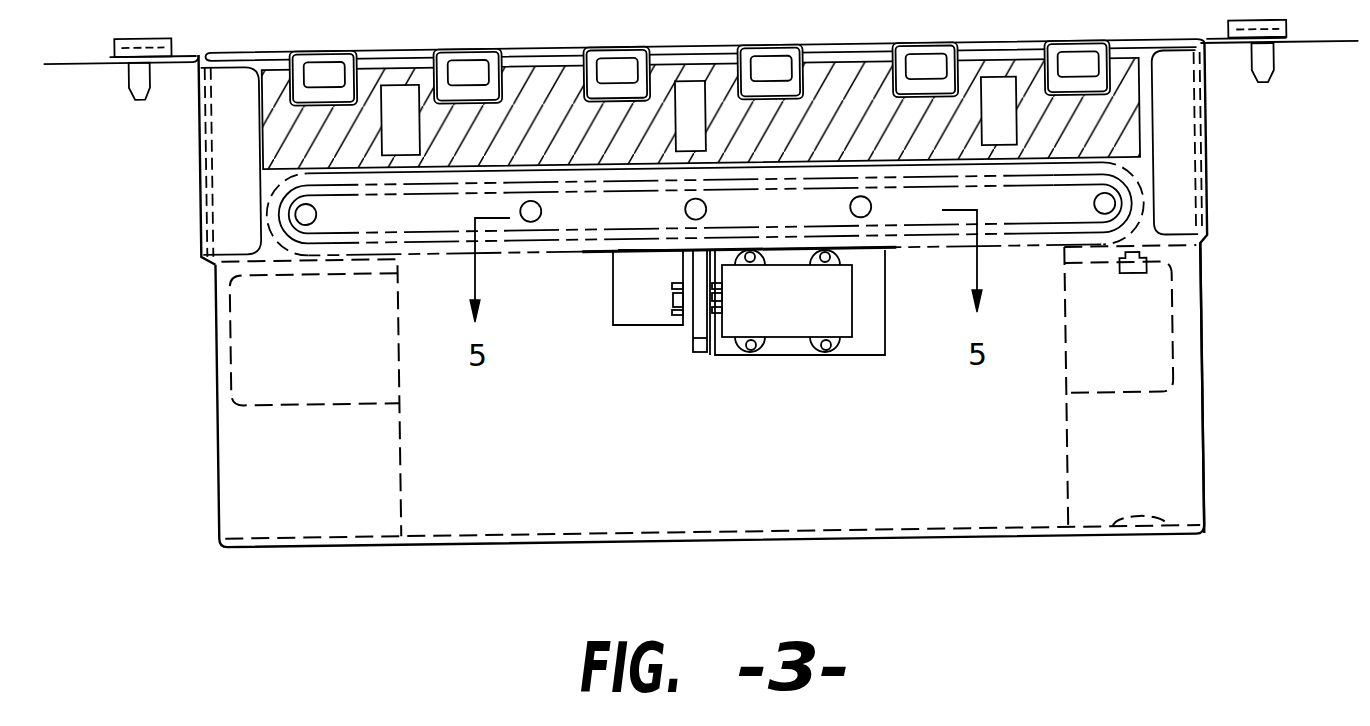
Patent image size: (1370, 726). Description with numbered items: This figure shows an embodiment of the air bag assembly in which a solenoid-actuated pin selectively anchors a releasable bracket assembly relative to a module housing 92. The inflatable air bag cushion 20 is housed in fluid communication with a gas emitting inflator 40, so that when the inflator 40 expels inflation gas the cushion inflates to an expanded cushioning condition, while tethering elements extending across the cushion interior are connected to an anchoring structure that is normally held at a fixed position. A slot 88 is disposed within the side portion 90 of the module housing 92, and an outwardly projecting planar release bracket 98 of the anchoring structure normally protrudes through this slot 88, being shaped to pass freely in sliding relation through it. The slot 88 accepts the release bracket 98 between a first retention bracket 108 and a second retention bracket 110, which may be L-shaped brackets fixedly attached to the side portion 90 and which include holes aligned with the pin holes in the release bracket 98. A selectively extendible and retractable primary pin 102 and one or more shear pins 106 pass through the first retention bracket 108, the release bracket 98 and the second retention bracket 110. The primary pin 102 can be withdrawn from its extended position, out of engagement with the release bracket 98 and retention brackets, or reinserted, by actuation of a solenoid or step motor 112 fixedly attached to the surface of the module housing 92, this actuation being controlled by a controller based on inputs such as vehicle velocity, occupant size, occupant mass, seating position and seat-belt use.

The inflatable air bag cushion 20 is at (272, 201).
The gas emitting inflator 40 is at (230, 337).
The slot 88 is at (698, 354).
The side portion 90 is at (956, 494).
The module housing 92 is at (1011, 539).
The release bracket 98 is at (704, 330).
The primary pin 102 is at (675, 298).
The shear pins 106 is at (672, 313).
The first retention bracket 108 is at (718, 302).
The second retention bracket 110 is at (680, 265).
The solenoid or step motor 112 is at (853, 295).